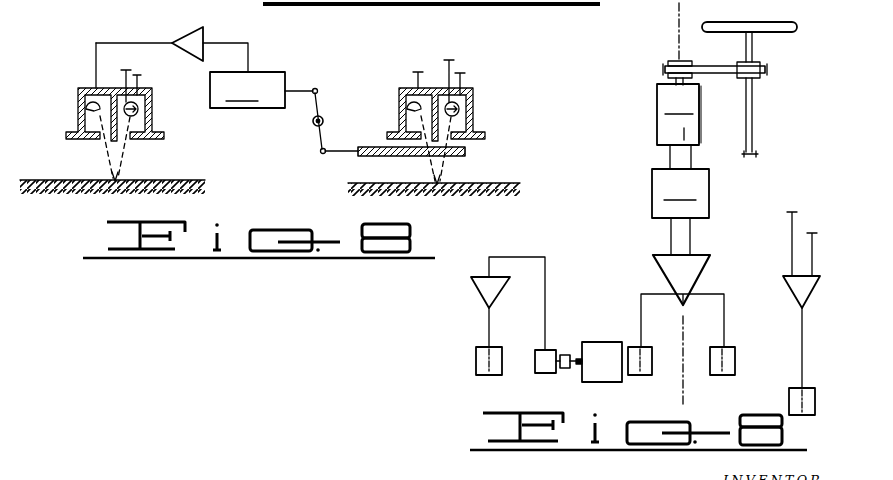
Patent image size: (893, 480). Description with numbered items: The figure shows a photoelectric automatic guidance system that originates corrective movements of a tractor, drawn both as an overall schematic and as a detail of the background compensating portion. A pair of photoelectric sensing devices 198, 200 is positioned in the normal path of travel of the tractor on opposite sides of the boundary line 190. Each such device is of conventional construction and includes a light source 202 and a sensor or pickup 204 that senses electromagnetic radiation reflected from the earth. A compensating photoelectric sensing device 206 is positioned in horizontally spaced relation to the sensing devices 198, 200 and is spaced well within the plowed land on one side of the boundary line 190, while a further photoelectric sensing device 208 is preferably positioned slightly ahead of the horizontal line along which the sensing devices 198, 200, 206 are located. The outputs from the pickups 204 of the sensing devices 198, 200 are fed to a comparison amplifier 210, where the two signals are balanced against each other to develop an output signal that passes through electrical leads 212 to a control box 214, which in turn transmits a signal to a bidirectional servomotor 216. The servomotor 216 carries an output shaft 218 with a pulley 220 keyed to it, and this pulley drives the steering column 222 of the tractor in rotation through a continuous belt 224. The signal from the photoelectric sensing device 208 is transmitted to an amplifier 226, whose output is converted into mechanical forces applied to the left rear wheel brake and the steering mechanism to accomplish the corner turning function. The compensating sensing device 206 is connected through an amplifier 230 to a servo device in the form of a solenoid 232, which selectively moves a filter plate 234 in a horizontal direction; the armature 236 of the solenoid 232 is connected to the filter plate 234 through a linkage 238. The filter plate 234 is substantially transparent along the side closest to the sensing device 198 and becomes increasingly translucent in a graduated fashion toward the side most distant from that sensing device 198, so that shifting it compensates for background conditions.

In FIG. 9, the boundary line 190 is at (690, 342).
In FIG. 8, the photoelectric sensing device 198 is at (478, 89).
In FIG. 9, the photoelectric sensing device 198 is at (634, 377).
In FIG. 9, the photoelectric sensing device 200 is at (714, 377).
In FIG. 8, the light source 202 is at (140, 109).
In FIG. 8, the sensor or pickup 204 is at (88, 104).
In FIG. 8, the compensating photoelectric sensing device 206 is at (75, 85).
In FIG. 9, the compensating photoelectric sensing device 206 is at (479, 358).
In FIG. 9, the photoelectric sensing device 208 is at (813, 392).
In FIG. 9, the comparison amplifier 210 is at (662, 262).
In FIG. 9, the electrical leads 212 is at (670, 232).
In FIG. 9, the control box 214 is at (680, 193).
In FIG. 9, the bidirectional servomotor 216 is at (679, 114).
In FIG. 9, the output shaft 218 is at (676, 61).
In FIG. 9, the pulley 220 is at (667, 63).
In FIG. 9, the steering column 222 is at (753, 104).
In FIG. 9, the continuous belt 224 is at (714, 74).
In FIG. 9, the amplifier 226 is at (808, 290).
In FIG. 8, the amplifier 230 is at (199, 28).
In FIG. 9, the amplifier 230 is at (481, 293).
In FIG. 8, the solenoid 232 is at (261, 90).
In FIG. 9, the solenoid 232 is at (538, 351).
In FIG. 8, the filter plate 234 is at (362, 147).
In FIG. 9, the filter plate 234 is at (603, 343).
In FIG. 8, the armature 236 is at (296, 92).
In FIG. 8, the linkage 238 is at (316, 139).
In FIG. 9, the linkage 238 is at (573, 356).